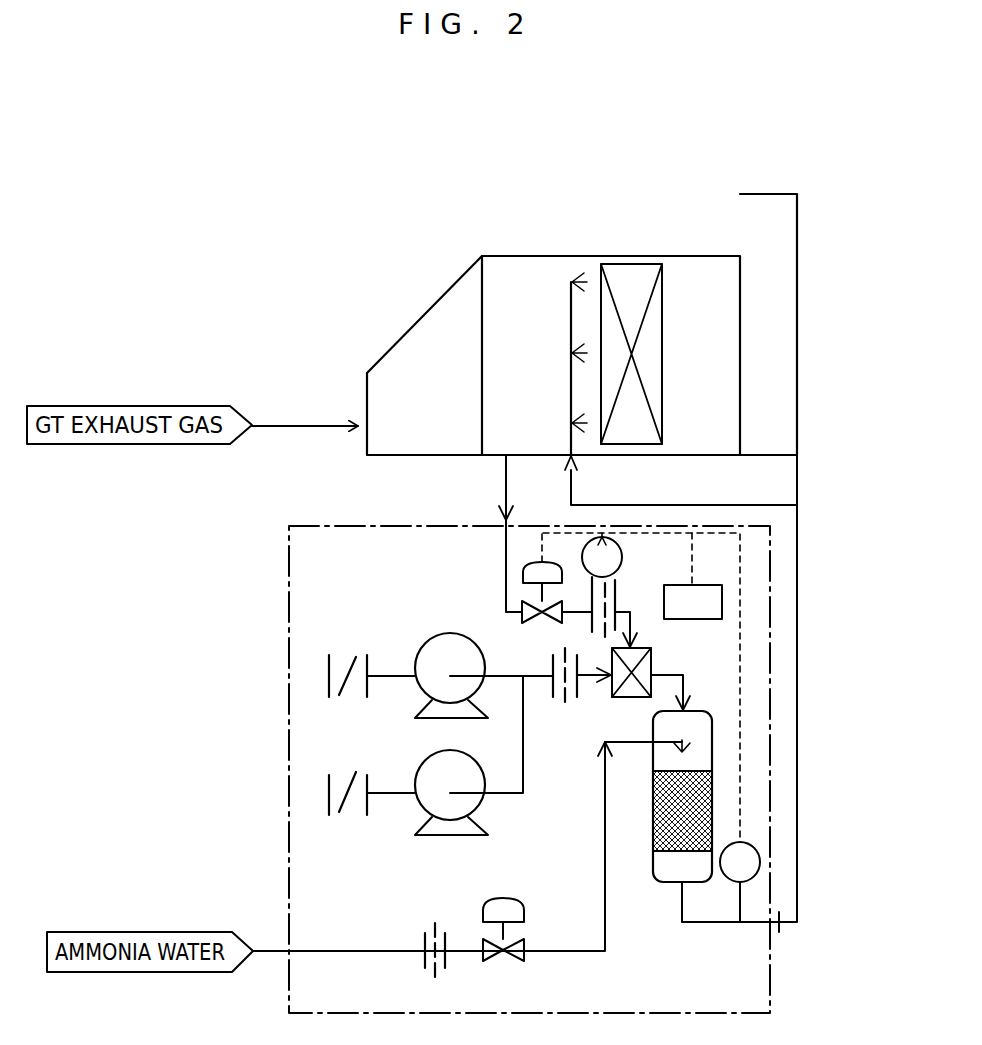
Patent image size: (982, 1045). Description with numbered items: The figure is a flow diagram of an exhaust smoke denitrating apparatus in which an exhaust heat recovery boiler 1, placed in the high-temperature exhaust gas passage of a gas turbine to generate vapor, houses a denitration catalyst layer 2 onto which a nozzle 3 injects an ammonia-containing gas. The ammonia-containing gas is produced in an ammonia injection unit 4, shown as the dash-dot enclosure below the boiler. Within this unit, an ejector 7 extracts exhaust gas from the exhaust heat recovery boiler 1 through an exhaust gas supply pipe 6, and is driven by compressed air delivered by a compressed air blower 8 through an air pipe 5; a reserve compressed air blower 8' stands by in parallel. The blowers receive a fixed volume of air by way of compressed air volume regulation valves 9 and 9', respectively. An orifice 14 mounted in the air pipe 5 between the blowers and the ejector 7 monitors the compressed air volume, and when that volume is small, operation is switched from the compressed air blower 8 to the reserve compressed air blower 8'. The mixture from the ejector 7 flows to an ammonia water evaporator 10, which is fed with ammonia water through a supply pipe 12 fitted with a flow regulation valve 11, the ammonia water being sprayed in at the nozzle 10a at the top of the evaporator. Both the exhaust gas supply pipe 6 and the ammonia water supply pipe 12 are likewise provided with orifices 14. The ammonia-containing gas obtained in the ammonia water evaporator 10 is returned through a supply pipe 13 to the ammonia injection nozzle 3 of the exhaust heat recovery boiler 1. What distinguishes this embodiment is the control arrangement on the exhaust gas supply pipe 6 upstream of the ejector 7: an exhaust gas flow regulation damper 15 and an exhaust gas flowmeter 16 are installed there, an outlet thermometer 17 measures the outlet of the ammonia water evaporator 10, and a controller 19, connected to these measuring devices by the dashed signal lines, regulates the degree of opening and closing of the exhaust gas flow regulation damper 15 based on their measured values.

The exhaust heat recovery boiler 1 is at (398, 339).
The denitration catalyst layer 2 is at (629, 262).
The nozzle 3 is at (578, 278).
The ammonia injection unit 4 is at (288, 703).
The air pipe 5 is at (508, 675).
The exhaust gas supply pipe 6 is at (504, 486).
The ejector 7 is at (652, 655).
The compressed air blower 8 is at (427, 655).
The reserve compressed air blower 8' is at (429, 784).
The compressed air volume regulation valve 9 is at (348, 659).
The compressed air volume regulation valve 9' is at (348, 776).
The ammonia water evaporator 10 is at (653, 783).
The spray nozzle of vaporizer 10a is at (690, 746).
The flow regulation valve 11 is at (503, 897).
The ammonia water supply pipe 12 is at (605, 938).
The supply pipe 13 is at (689, 504).
The orifice 14 is at (637, 598).
The exhaust gas flow regulation damper 15 is at (522, 569).
The exhaust gas flowmeter 16 is at (622, 555).
The outlet thermometer 17 is at (760, 862).
The controller 19 is at (722, 605).